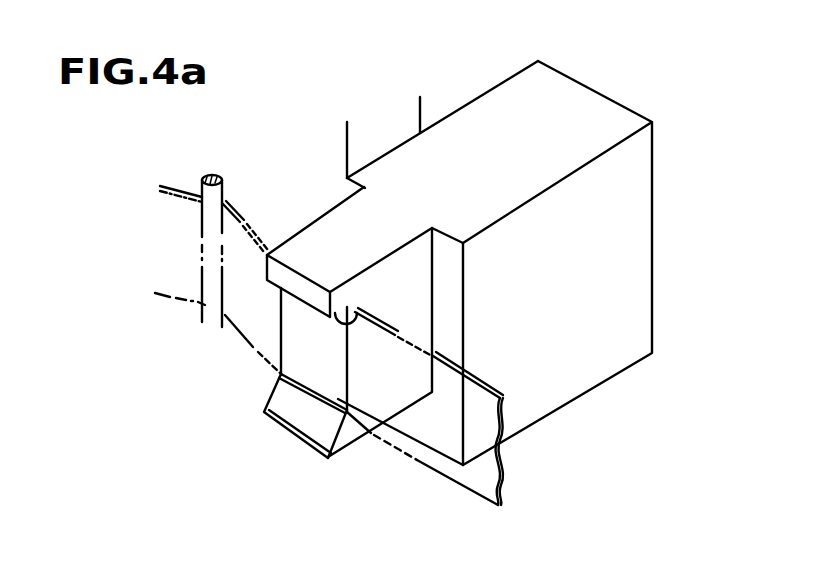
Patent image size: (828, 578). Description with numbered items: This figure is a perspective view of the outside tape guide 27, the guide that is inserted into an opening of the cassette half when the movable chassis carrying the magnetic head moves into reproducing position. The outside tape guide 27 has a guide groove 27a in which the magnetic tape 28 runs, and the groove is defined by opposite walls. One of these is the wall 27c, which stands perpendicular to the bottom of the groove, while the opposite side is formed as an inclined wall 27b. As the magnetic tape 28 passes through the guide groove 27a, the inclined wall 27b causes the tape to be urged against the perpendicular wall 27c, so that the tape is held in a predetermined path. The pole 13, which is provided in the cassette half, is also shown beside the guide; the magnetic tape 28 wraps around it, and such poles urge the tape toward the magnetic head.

The pole 13 is at (205, 249).
The outside tape guide 27 is at (303, 243).
The guide groove 27a is at (323, 358).
The inclined wall 27b is at (281, 416).
The wall 27c is at (356, 320).
The magnetic tape 28 is at (420, 460).